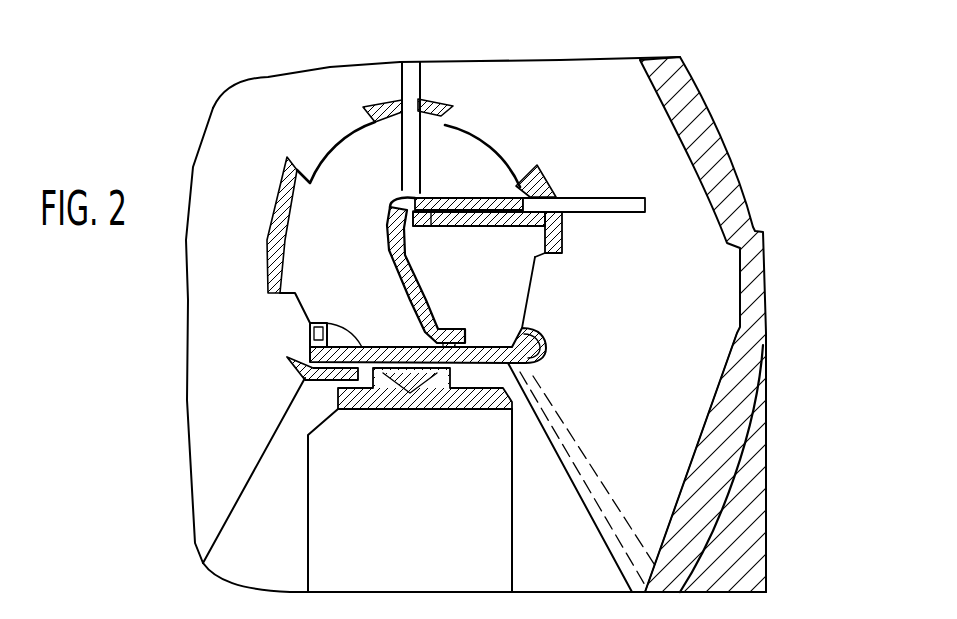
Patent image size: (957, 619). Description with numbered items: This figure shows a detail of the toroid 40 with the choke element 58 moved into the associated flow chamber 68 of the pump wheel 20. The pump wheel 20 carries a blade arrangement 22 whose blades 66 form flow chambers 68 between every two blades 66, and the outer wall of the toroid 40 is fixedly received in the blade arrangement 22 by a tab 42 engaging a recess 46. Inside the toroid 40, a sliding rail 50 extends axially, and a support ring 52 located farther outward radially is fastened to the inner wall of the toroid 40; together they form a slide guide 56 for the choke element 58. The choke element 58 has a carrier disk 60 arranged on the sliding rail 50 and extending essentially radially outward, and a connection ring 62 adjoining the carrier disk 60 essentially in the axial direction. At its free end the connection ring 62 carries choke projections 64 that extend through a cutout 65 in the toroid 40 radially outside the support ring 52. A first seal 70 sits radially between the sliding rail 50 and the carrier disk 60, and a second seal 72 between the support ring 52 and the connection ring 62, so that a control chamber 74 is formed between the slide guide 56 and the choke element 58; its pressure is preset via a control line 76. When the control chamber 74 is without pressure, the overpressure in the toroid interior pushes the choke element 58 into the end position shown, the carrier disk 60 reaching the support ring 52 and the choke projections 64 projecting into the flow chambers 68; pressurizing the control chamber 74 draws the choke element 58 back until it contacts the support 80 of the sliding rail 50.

The pump wheel 20 is at (658, 157).
The blade arrangement 22 is at (700, 403).
The toroid 40 is at (437, 96).
The tab 42 is at (493, 300).
The recess 46 is at (540, 257).
The sliding rail 50 is at (307, 326).
The support ring 52 is at (480, 222).
The slide guide 56 is at (480, 342).
The choke element 58 is at (383, 223).
The carrier disk 60 is at (392, 247).
The connection ring 62 is at (477, 197).
The choke projections 64 is at (580, 203).
The cutout 65 is at (560, 220).
The blade 66 is at (700, 337).
The flow chamber 68 is at (693, 433).
The first seal 70 is at (460, 409).
The second seal 72 is at (408, 190).
The control chamber 74 is at (537, 333).
The control line 76 is at (598, 512).
The support 80 is at (312, 333).